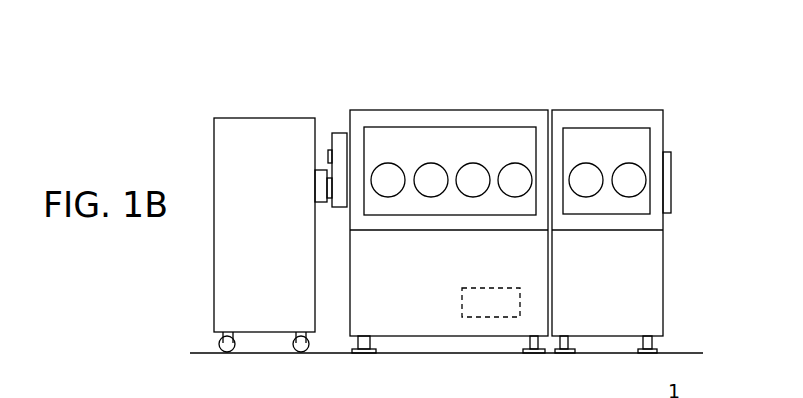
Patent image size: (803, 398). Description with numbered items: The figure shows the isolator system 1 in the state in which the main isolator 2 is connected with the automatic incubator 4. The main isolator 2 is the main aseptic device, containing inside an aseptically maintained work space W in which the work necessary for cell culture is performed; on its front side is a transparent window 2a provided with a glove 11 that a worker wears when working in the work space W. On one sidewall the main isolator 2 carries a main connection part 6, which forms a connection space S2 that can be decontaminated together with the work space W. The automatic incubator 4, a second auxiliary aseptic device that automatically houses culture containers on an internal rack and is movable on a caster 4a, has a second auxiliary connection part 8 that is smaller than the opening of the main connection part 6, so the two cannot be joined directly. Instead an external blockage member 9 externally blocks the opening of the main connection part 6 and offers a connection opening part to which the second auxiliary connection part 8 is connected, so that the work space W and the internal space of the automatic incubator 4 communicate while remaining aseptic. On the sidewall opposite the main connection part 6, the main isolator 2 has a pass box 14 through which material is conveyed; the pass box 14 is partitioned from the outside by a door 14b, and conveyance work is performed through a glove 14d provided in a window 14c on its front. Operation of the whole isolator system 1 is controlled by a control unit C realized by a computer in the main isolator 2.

The isolator system 1 is at (629, 48).
The main isolator 2 is at (478, 109).
The transparent window 2a is at (417, 140).
The automatic incubator 4 is at (285, 118).
The caster 4a is at (297, 350).
The main connection part 6 is at (343, 126).
The second auxiliary connection part 8 is at (322, 209).
The external blockage member 9 is at (330, 147).
The glove 11 is at (515, 165).
The pass box 14 is at (655, 122).
The door 14b is at (669, 178).
The window 14c is at (585, 137).
The glove 14d is at (630, 170).
The connection space S2 is at (342, 193).
The work space W is at (448, 200).
The control unit C is at (488, 305).